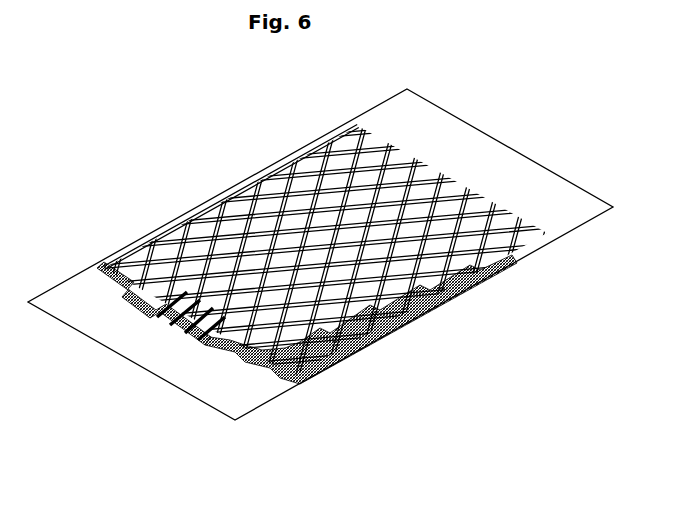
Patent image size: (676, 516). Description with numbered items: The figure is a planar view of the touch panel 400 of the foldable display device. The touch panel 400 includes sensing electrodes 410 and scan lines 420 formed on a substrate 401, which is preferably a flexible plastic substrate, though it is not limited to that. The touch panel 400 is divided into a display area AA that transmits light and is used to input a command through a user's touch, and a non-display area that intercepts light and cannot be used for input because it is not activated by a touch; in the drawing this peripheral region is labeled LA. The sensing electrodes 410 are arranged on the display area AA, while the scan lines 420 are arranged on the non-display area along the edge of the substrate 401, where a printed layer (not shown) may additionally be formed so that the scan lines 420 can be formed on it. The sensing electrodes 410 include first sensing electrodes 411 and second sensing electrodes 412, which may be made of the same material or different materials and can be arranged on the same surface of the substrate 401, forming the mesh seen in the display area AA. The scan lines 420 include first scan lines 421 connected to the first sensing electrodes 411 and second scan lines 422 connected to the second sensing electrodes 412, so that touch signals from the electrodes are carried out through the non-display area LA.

The touch panel 400 is at (126, 121).
The substrate 401 is at (363, 114).
The sensing electrodes 410 is at (56, 188).
The first sensing electrodes 411 is at (148, 233).
The second sensing electrodes 412 is at (168, 268).
The scan lines 420 is at (342, 469).
The first scan lines 421 is at (322, 370).
The second scan lines 422 is at (213, 343).
The display area AA is at (220, 206).
The line area LA is at (578, 212).